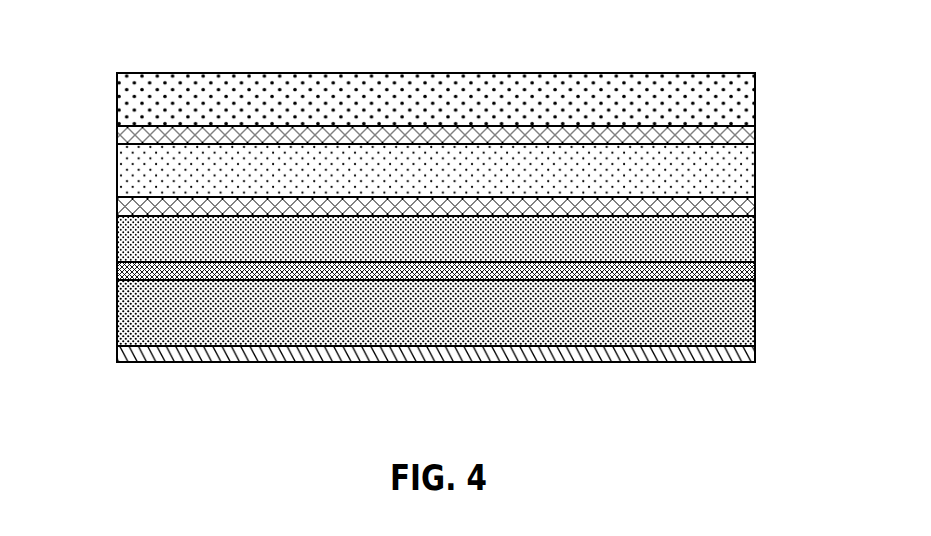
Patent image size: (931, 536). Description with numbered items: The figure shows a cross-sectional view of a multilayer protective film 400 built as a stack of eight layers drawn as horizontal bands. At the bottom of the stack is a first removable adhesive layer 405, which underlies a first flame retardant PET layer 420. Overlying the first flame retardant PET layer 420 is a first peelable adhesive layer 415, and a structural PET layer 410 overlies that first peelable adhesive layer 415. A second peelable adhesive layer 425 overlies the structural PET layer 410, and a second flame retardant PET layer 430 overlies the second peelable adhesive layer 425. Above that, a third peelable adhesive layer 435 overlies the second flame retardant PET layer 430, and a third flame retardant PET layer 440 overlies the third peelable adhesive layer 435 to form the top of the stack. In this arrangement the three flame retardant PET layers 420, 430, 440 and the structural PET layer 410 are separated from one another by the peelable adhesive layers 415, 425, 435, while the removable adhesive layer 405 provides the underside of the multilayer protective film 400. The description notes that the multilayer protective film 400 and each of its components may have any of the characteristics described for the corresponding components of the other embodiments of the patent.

The multilayer protective film 400 is at (146, 40).
The first removable adhesive layer 405 is at (763, 346).
The structural PET layer 410 is at (110, 227).
The first peelable adhesive layer 415 is at (762, 265).
The first flame retardant PET layer 420 is at (110, 295).
The second peelable adhesive layer 425 is at (763, 201).
The second flame retardant PET layer 430 is at (109, 166).
The third peelable adhesive layer 435 is at (763, 131).
The third flame retardant PET layer 440 is at (109, 92).